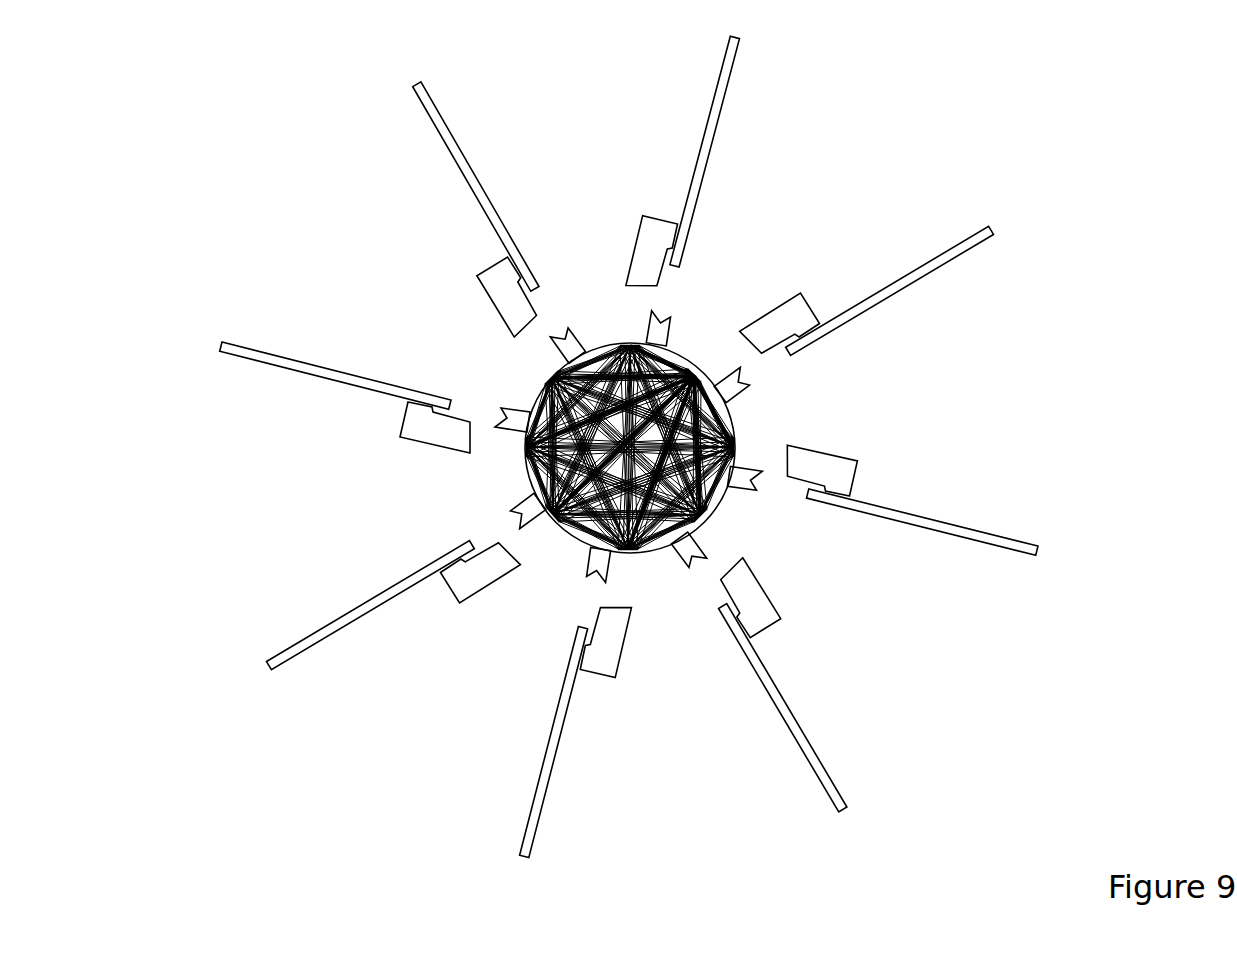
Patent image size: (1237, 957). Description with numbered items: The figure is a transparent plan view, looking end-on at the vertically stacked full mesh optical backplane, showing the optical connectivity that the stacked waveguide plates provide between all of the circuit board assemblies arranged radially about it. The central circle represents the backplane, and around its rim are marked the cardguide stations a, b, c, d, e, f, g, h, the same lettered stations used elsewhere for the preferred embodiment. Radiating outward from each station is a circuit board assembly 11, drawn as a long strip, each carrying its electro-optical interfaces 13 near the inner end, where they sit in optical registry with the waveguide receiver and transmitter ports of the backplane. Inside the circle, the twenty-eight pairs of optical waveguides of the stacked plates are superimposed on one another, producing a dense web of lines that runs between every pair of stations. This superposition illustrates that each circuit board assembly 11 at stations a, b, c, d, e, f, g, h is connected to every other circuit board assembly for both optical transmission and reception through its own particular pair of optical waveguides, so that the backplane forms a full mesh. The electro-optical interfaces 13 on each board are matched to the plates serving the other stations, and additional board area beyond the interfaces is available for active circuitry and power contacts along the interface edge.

The circuit board assembly 11 is at (315, 370).
The electro-optical interfaces 13 is at (420, 427).
The cardguide station a is at (746, 445).
The cardguide station b is at (710, 366).
The cardguide station c is at (630, 324).
The cardguide station d is at (544, 363).
The cardguide station e is at (512, 445).
The cardguide station f is at (543, 527).
The cardguide station g is at (631, 571).
The cardguide station h is at (714, 528).